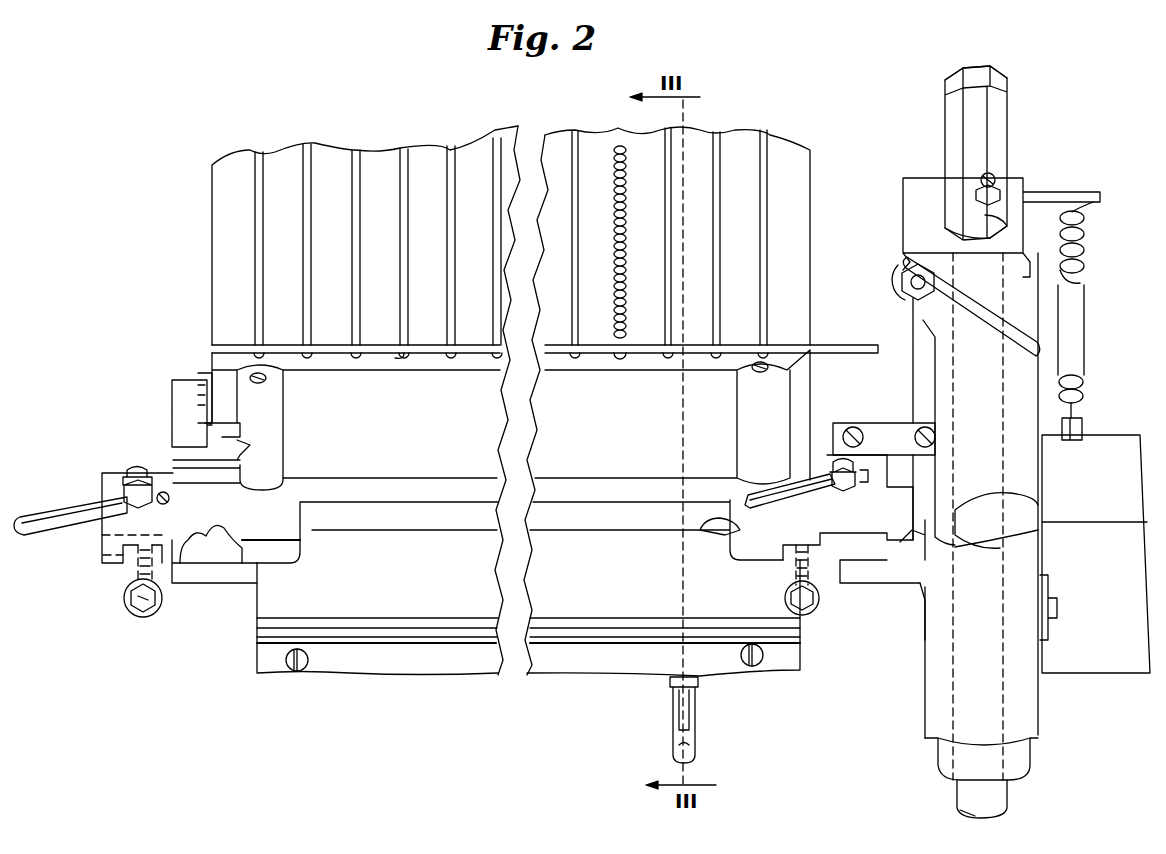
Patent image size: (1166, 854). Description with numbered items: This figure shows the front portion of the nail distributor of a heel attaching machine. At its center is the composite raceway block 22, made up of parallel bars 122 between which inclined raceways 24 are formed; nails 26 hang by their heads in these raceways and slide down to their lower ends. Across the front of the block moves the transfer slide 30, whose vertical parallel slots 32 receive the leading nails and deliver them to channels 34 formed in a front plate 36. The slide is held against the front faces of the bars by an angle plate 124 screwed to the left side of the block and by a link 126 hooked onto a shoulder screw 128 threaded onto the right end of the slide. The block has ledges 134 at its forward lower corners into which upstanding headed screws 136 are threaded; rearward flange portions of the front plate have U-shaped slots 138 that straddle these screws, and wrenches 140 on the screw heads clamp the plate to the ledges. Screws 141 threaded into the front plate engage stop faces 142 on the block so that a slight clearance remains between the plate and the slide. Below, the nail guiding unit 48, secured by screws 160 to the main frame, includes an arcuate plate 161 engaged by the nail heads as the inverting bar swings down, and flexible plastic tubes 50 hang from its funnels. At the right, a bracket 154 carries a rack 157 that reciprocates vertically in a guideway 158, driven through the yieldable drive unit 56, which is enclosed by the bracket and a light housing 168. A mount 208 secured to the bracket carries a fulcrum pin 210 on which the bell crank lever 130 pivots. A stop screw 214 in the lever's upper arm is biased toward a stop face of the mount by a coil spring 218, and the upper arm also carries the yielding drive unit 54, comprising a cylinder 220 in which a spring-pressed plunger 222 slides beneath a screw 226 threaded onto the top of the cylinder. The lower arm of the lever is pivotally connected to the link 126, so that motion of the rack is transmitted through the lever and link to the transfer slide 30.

The composite raceway block 22 is at (840, 203).
The inclined raceways 24 is at (757, 140).
The nails 26 is at (620, 150).
The transfer slide 30 is at (798, 345).
The vertical parallel slots 32 is at (716, 348).
The channels 34 is at (403, 358).
The front plate 36 is at (491, 456).
The nail guiding unit 48 is at (238, 655).
The flexible plastic tubes 50 is at (672, 738).
The yielding drive unit 54 is at (1026, 124).
The yieldable drive unit 56 is at (1106, 415).
The parallel bars 122 is at (375, 150).
The angle plate 124 is at (172, 410).
The link 126 is at (888, 422).
The shoulder screw 128 is at (851, 428).
The bell crank lever 130 is at (900, 305).
The ledges 134 is at (208, 565).
The upstanding headed screws 136 is at (141, 462).
The U-shaped slots 138 is at (160, 486).
The wrenches 140 is at (64, 508).
The screws 141 is at (126, 608).
The stop faces 142 is at (128, 548).
The bracket 154 is at (922, 592).
The rack 157 is at (1010, 800).
The guideway 158 is at (955, 678).
The screws 160 is at (292, 668).
The arcuate plate 161 is at (528, 618).
The light housing 168 is at (1144, 440).
The mount 208 is at (975, 516).
The fulcrum pin 210 is at (926, 292).
The stop screw 214 is at (1003, 182).
The coil spring 218 is at (1082, 270).
The cylinder 220 is at (945, 133).
The spring-pressed plunger 222 is at (982, 292).
The screw 226 is at (990, 80).